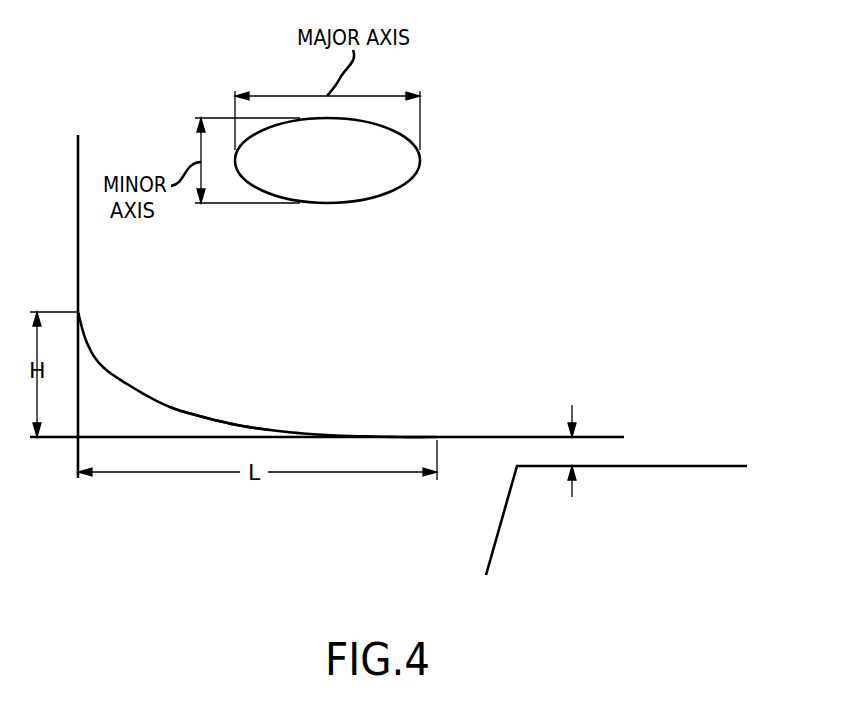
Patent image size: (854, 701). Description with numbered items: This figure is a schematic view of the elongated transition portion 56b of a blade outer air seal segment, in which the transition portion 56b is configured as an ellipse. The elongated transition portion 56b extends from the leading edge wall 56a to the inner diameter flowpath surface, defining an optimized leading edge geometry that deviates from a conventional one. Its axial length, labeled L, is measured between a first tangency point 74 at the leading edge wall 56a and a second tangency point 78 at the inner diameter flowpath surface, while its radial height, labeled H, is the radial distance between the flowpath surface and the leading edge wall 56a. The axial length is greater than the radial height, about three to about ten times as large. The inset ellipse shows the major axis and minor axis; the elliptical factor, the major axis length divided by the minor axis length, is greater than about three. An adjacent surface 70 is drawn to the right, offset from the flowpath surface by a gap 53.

The first tangency point 74 is at (236, 163).
The second tangency point 78 is at (300, 203).
The leading edge wall 56a is at (136, 405).
The elongated transition portion 56b is at (207, 413).
The adjacent surface 70 is at (677, 488).
The offset gap 53 is at (572, 451).